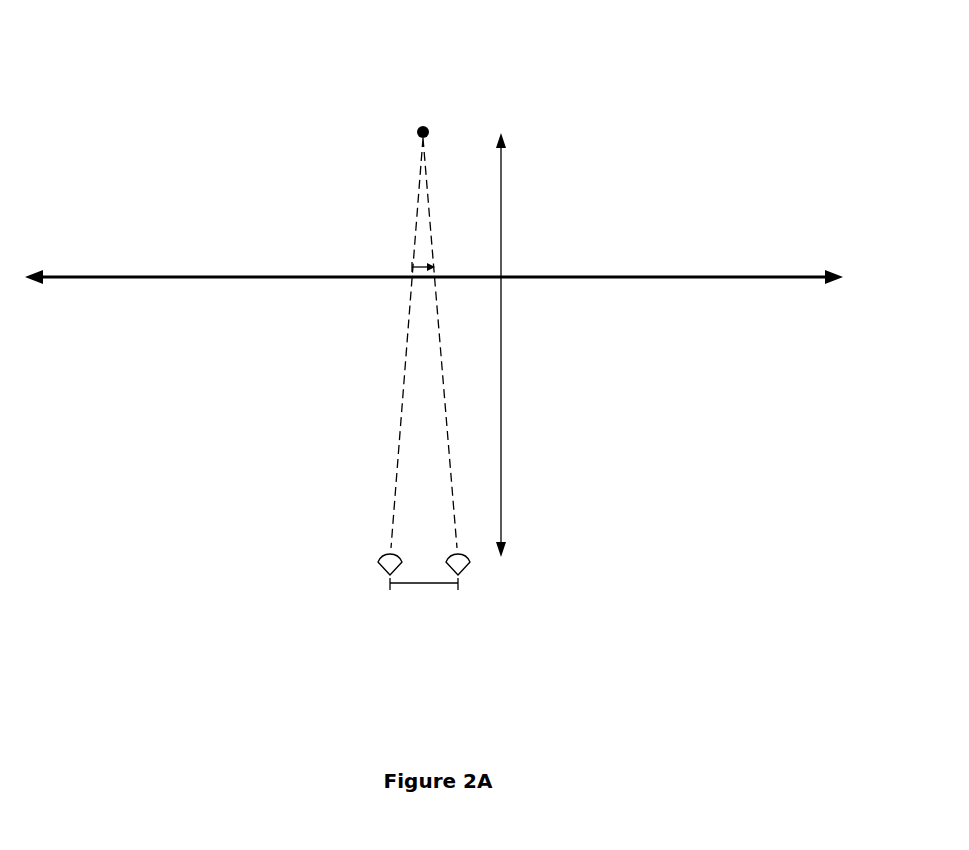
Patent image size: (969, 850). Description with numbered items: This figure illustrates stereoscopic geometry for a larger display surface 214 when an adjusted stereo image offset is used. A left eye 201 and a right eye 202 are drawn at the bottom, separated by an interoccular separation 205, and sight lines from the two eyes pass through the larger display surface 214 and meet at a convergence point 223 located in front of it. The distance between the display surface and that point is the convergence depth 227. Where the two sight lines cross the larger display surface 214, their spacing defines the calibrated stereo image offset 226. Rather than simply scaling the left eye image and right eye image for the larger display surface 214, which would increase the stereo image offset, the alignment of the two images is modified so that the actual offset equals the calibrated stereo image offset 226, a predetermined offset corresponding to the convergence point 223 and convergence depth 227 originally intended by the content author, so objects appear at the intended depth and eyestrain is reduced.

The left eye 201 is at (378, 560).
The right eye 202 is at (468, 560).
The interoccular separation 205 is at (417, 583).
The larger display surface 214 is at (671, 277).
The convergence point 223 is at (425, 126).
The calibrated stereo image offset 226 is at (433, 266).
The convergence depth 227 is at (501, 425).